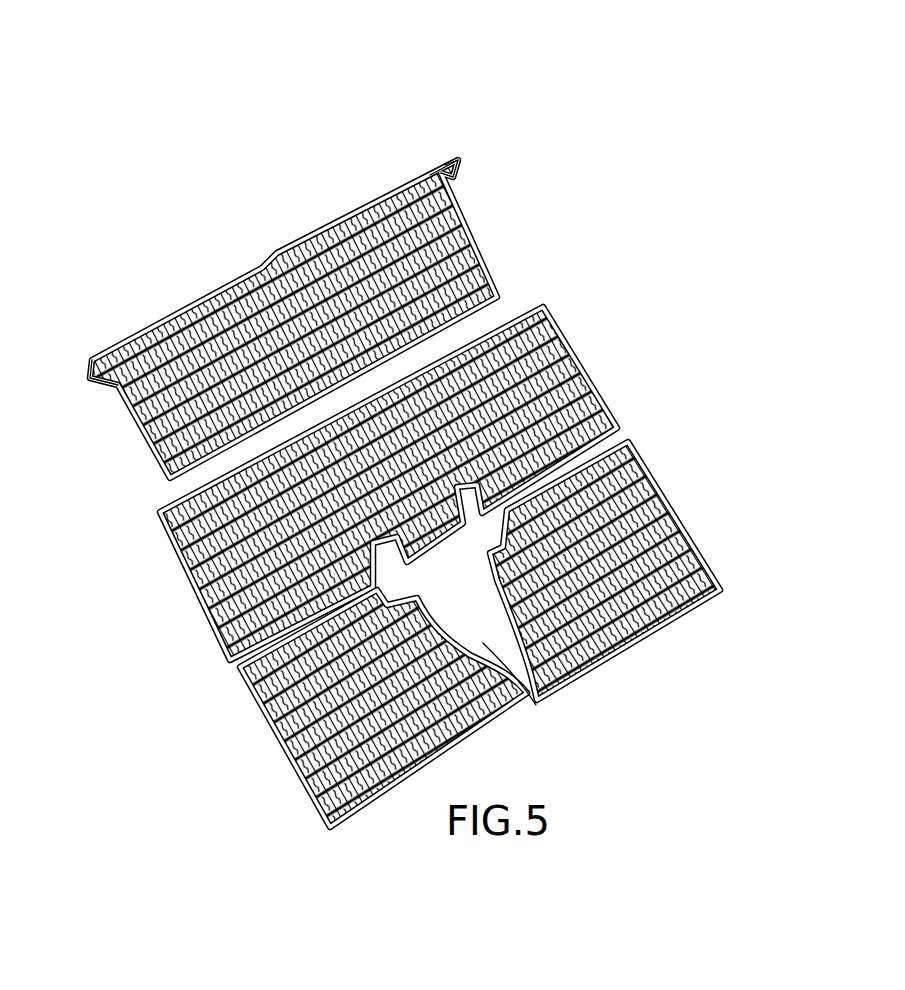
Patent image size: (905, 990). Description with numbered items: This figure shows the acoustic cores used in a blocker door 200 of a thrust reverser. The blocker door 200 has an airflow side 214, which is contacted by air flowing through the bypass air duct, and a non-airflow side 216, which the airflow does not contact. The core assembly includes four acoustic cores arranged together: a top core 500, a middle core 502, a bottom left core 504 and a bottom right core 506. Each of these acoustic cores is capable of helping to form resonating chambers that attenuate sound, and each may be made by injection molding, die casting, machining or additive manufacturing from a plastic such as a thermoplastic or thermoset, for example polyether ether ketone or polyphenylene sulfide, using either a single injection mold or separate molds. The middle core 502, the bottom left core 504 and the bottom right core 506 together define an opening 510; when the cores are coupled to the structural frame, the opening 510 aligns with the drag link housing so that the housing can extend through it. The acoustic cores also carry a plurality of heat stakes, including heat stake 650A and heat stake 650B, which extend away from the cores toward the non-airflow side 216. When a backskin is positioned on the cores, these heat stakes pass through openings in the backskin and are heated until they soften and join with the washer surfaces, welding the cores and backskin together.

The blocker door 200 is at (130, 104).
The top core 500 is at (120, 395).
The middle core 502 is at (190, 586).
The bottom left core 504 is at (268, 722).
The bottom right core 506 is at (716, 590).
The opening 510 is at (536, 705).
The heat stake 650A is at (125, 378).
The heat stake 650B is at (413, 182).
The airflow side 214 is at (450, 160).
The non-airflow side 216 is at (442, 178).